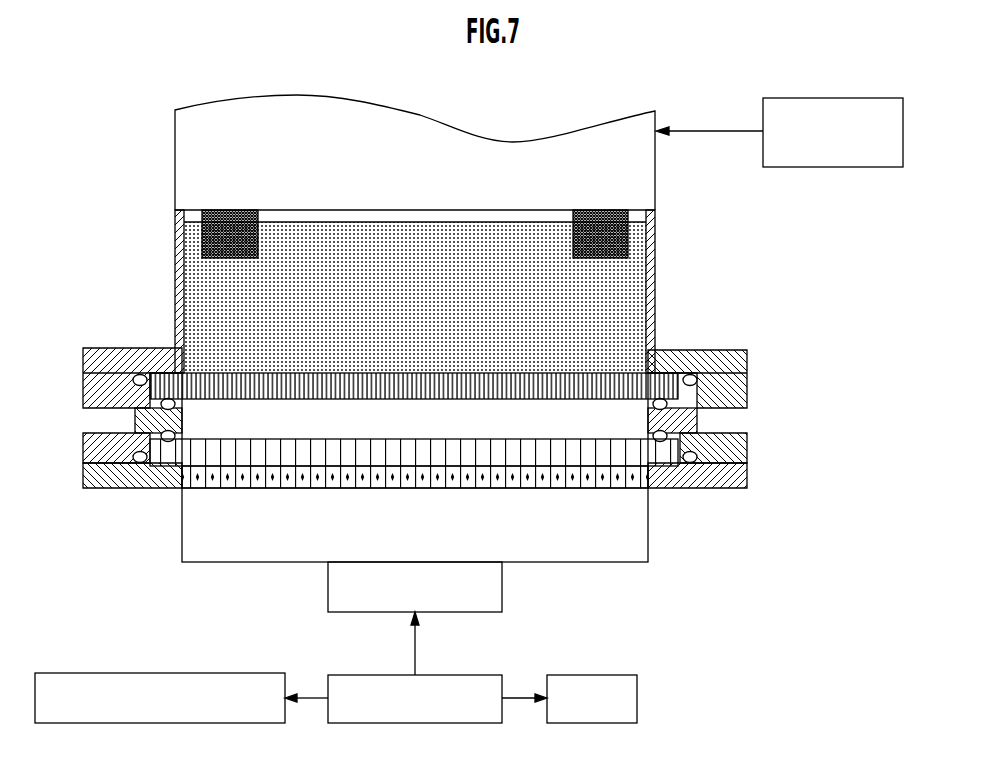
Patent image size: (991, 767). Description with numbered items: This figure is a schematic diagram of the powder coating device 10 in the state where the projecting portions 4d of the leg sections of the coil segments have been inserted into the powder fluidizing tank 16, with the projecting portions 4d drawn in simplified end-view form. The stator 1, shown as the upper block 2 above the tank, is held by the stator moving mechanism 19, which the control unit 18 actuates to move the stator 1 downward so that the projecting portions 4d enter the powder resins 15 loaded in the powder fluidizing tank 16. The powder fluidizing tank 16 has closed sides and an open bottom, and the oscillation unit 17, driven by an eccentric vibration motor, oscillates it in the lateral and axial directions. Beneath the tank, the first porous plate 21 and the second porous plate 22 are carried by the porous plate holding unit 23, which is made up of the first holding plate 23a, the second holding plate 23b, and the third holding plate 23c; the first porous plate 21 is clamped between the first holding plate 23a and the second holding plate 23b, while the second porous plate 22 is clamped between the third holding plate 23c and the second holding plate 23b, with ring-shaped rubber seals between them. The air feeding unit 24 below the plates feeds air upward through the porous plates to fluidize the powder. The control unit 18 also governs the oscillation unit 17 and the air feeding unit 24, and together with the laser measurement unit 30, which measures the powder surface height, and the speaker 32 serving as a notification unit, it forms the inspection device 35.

The stator 1 is at (167, 158).
The holding plate 2 is at (655, 163).
The projecting portion 4d is at (176, 243).
The powder coating device 10 is at (775, 266).
The powder resins 15 is at (415, 212).
The powder fluidizing tank 16 is at (656, 280).
The oscillation unit 17 is at (503, 585).
The control unit 18 is at (435, 674).
The stator moving mechanism 19 is at (905, 130).
The first porous plate 21 is at (469, 400).
The second porous plate 22 is at (608, 439).
The porous plate holding unit 23 is at (459, 422).
The first holding plate 23a is at (718, 349).
The second holding plate 23b is at (748, 455).
The third holding plate 23c is at (728, 489).
The air feeding unit 24 is at (649, 545).
The laser measurement unit 30 is at (202, 673).
The speaker 32 is at (639, 698).
The inspection device 35 is at (530, 645).